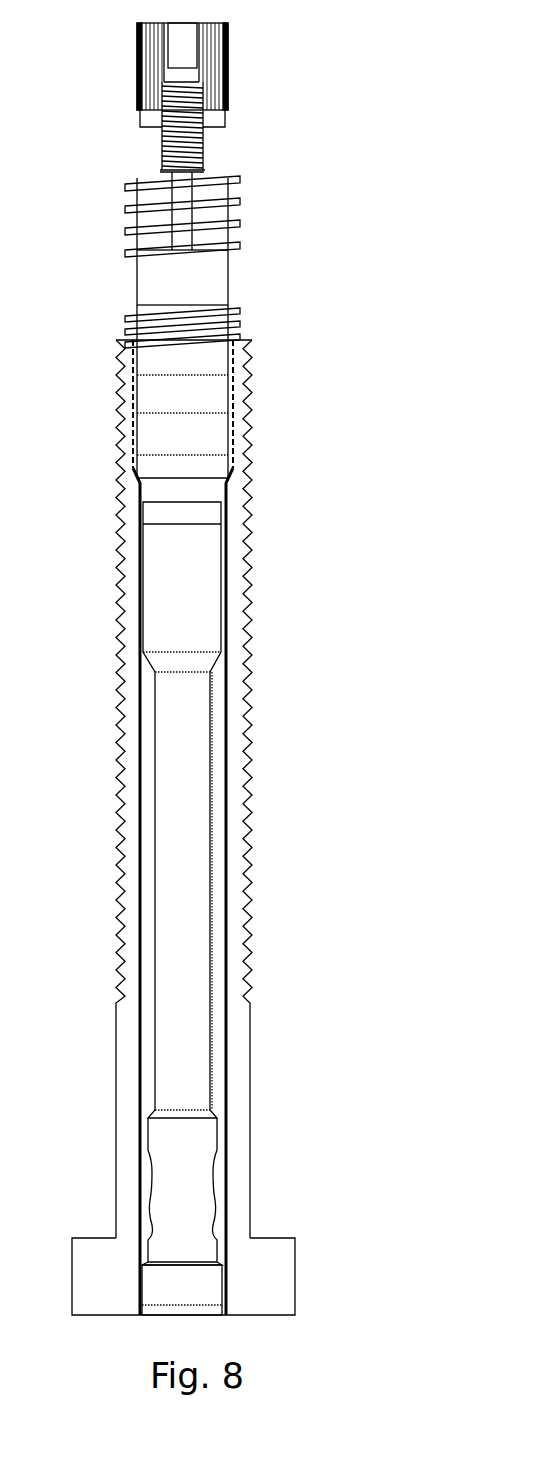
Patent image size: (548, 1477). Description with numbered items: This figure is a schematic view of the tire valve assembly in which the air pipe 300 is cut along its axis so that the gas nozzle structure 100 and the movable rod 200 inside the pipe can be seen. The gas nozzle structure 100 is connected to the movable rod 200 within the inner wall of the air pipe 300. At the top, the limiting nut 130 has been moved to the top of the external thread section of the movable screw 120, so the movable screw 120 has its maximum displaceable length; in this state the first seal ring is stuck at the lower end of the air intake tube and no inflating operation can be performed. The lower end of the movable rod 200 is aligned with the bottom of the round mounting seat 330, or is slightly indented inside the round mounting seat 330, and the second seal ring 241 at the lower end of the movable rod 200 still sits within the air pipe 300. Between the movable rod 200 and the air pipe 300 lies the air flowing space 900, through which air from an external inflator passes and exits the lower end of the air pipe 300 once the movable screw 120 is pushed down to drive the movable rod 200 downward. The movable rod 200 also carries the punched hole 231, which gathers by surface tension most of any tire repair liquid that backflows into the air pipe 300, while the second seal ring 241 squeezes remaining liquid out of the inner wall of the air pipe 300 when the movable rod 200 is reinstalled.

The limiting nut 130 is at (230, 88).
The movable screw 120 is at (205, 158).
The gas nozzle structure 100 is at (224, 294).
The air pipe 300 is at (245, 559).
The air flowing space 900 is at (214, 779).
The movable rod 200 is at (199, 856).
The punched hole 231 is at (212, 1153).
The second seal ring 241 is at (228, 1272).
The round mounting seat 330 is at (296, 1284).